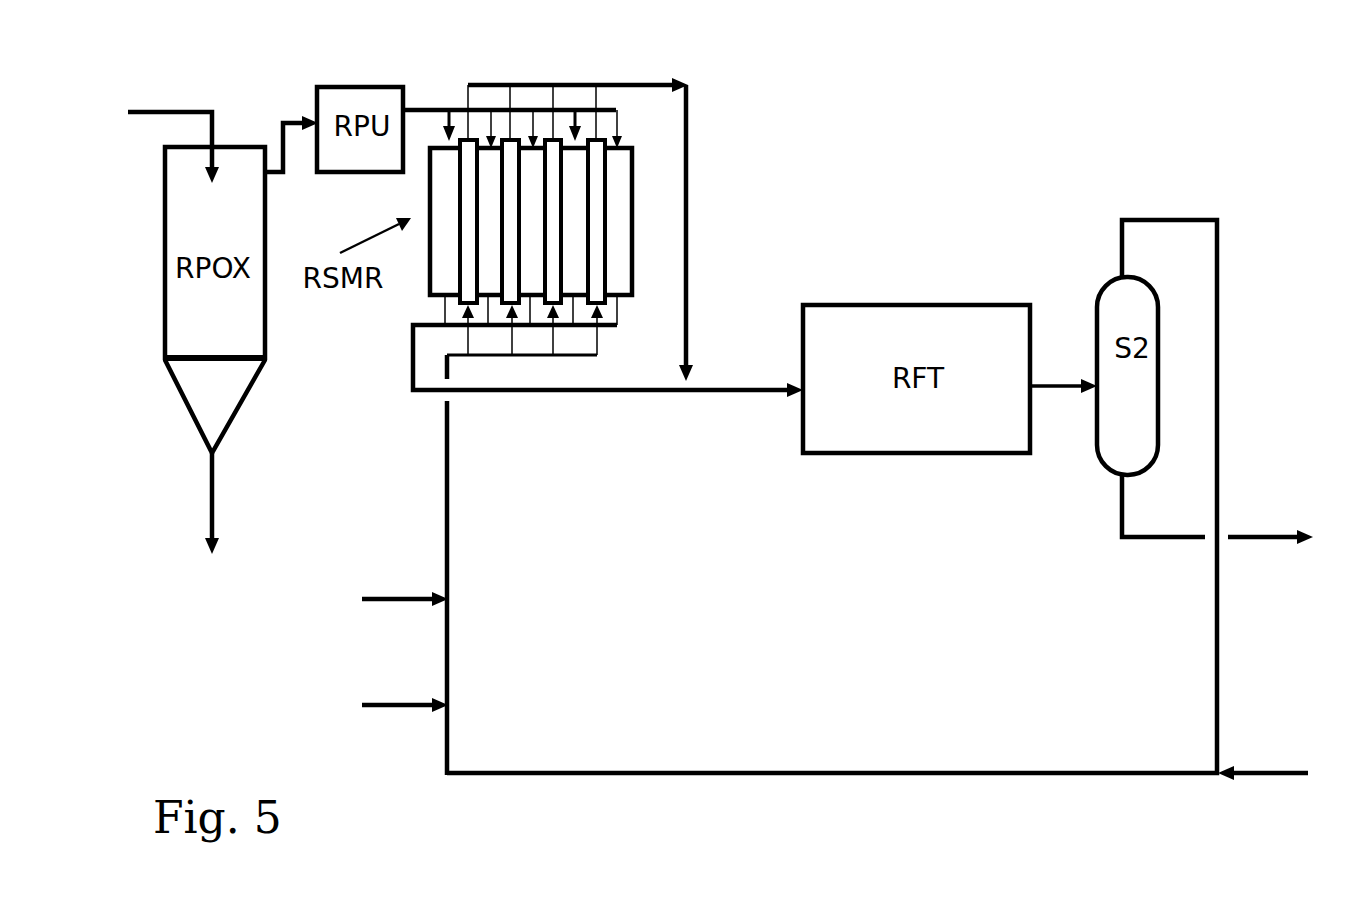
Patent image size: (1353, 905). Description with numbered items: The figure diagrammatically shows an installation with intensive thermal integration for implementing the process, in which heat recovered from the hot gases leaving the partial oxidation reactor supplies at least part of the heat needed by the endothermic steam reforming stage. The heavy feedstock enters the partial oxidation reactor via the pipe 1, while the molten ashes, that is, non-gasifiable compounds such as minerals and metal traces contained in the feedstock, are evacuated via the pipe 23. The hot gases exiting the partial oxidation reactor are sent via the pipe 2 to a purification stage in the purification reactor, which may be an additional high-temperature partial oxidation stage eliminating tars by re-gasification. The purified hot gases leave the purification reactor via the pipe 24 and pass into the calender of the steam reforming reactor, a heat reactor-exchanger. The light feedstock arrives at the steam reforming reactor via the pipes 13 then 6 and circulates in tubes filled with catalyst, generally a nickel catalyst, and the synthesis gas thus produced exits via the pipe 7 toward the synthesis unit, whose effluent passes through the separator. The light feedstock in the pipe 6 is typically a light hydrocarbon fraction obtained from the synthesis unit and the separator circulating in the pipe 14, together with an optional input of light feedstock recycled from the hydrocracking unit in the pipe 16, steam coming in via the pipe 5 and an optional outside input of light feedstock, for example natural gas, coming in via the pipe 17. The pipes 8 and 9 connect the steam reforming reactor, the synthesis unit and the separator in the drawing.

The pipe 1 is at (173, 115).
The pipe 2 is at (295, 118).
The pipe 24 is at (430, 105).
The pipe 7 is at (686, 137).
The product line from RSMR to RFT 8 is at (648, 392).
The line from RFT to separator S2 9 is at (1067, 388).
The pipe 13 is at (1170, 213).
The pipe 14 is at (1257, 543).
The pipe 16 is at (1262, 768).
The pipe 6 is at (447, 537).
The pipe 5 is at (400, 603).
The pipe 17 is at (402, 710).
The pipe 23 is at (208, 513).